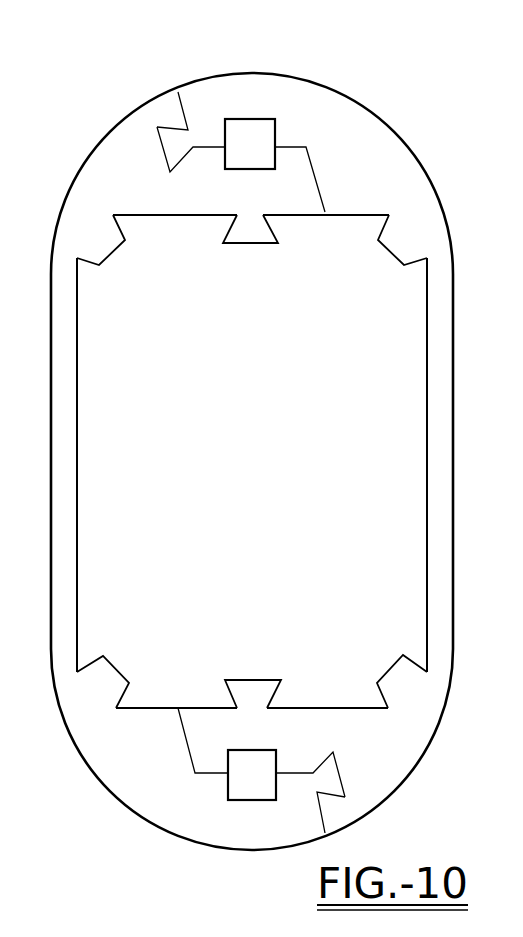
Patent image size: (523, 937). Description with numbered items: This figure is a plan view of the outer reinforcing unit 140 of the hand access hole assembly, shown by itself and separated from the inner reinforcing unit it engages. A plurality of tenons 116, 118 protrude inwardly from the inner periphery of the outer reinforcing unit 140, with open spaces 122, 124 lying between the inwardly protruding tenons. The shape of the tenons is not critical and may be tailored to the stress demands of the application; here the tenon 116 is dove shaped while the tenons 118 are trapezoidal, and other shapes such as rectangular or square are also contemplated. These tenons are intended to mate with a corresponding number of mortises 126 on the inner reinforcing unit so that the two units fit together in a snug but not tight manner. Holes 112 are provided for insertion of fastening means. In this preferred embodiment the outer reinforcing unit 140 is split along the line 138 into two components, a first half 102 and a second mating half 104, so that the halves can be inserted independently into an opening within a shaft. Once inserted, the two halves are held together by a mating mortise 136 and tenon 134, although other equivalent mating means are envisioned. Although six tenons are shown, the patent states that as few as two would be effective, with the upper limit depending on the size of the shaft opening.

The first half 102 is at (410, 727).
The second mating half 104 is at (155, 795).
The holes 112 is at (257, 128).
The tenon 116 is at (247, 239).
The tenons 118 is at (108, 250).
The open spaces 122 is at (78, 403).
The open spaces 124 is at (177, 216).
The mortises 126 is at (505, 314).
The tenon 134 is at (172, 130).
The mating mortise 136 is at (158, 128).
The split 138 is at (317, 176).
The outer reinforcing unit 140 is at (380, 100).